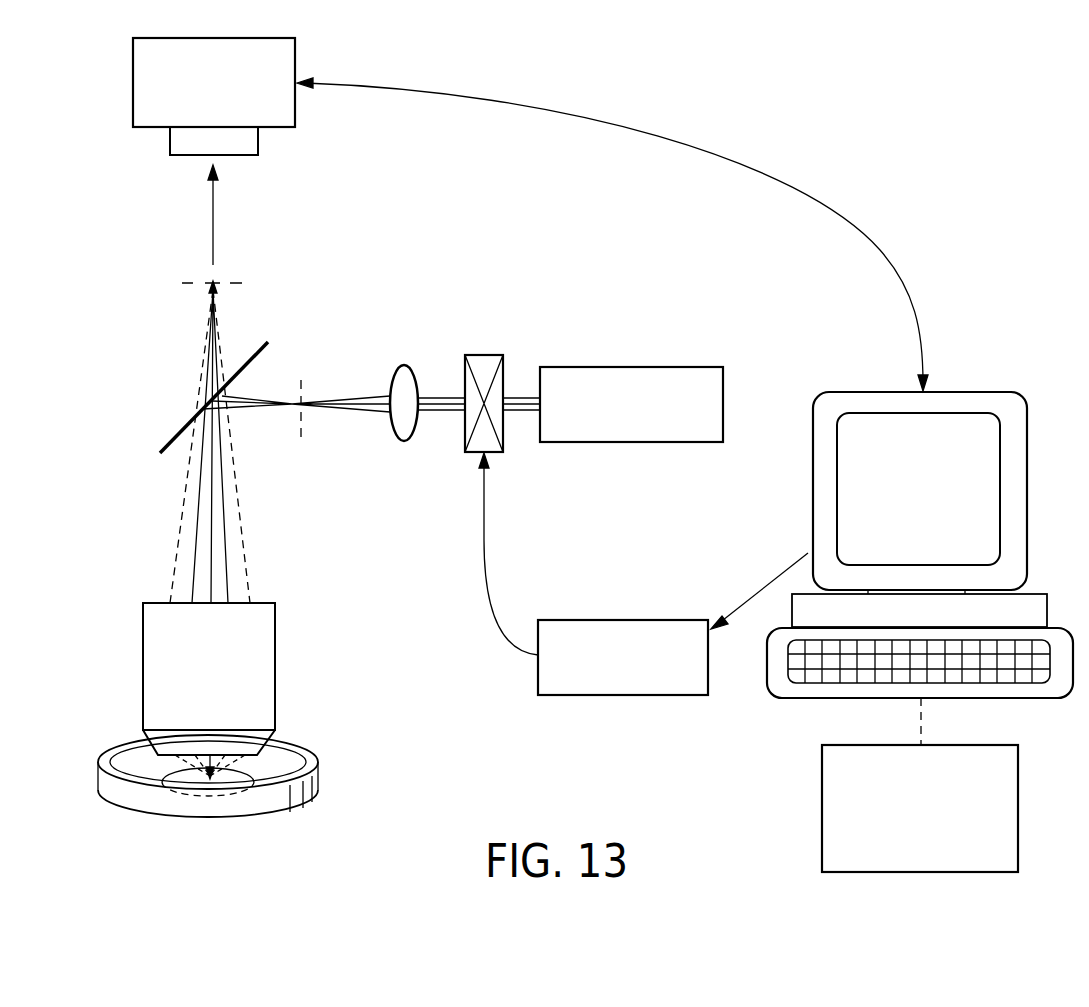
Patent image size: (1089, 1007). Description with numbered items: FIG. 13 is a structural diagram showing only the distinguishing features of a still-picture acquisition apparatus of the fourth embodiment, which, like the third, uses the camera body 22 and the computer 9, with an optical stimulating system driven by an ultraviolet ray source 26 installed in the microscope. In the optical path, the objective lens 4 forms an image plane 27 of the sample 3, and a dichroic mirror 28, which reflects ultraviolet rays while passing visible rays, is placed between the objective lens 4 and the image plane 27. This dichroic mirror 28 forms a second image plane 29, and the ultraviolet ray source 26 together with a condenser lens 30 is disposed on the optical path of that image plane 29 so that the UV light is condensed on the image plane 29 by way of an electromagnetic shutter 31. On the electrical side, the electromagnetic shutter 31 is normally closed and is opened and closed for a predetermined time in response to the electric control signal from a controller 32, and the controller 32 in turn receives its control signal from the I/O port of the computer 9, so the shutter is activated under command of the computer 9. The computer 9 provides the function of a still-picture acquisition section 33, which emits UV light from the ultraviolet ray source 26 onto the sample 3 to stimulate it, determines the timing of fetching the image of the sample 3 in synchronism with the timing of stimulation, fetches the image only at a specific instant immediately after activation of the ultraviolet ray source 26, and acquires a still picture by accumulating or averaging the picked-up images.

The sample 3 is at (268, 762).
The objective lens 4 is at (276, 628).
The computer 9 is at (1022, 418).
The camera body 22 is at (133, 82).
The ultraviolet ray source 26 is at (725, 396).
The image plane 27 is at (228, 281).
The dichroic mirror 28 is at (176, 440).
The image plane 29 is at (304, 378).
The condenser lens 30 is at (400, 366).
The electromagnetic shutter 31 is at (484, 355).
The controller 32 is at (618, 620).
The still-picture acquisition section 33 is at (1020, 814).